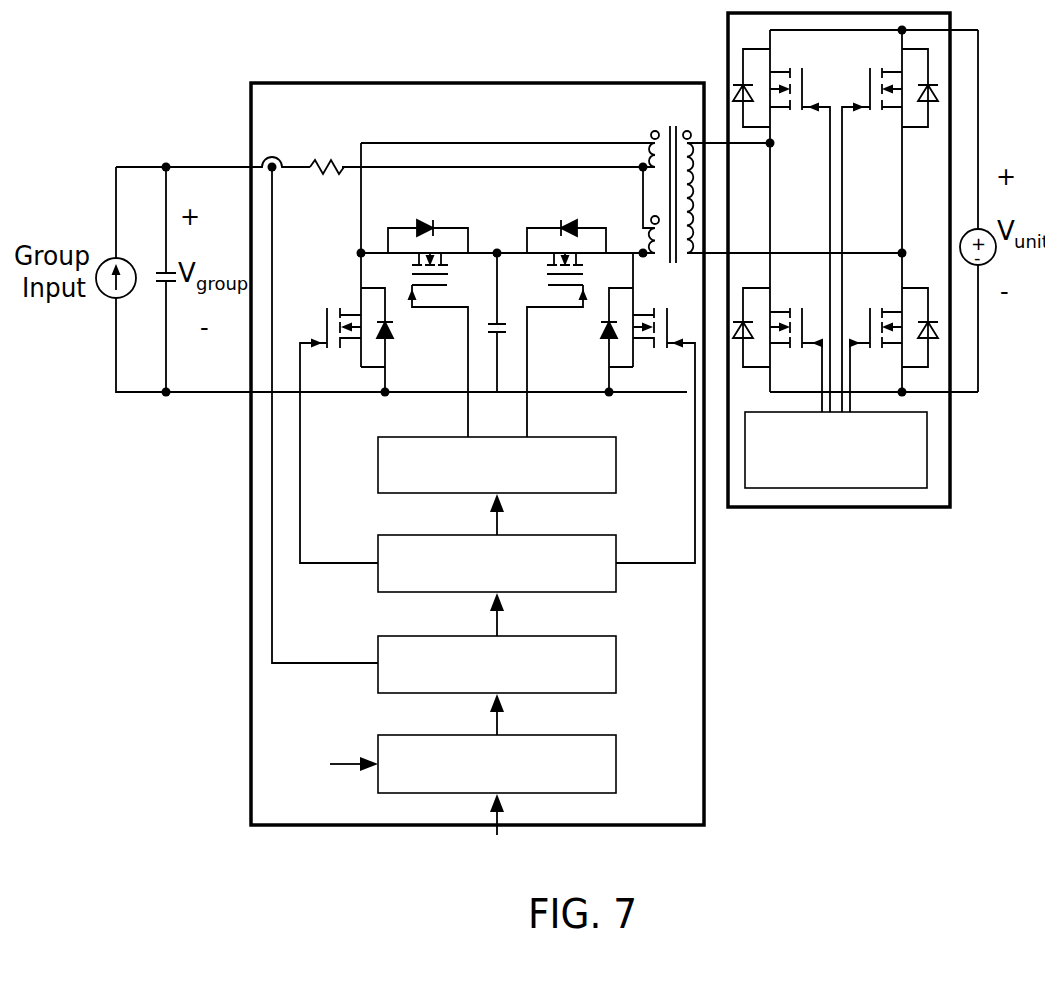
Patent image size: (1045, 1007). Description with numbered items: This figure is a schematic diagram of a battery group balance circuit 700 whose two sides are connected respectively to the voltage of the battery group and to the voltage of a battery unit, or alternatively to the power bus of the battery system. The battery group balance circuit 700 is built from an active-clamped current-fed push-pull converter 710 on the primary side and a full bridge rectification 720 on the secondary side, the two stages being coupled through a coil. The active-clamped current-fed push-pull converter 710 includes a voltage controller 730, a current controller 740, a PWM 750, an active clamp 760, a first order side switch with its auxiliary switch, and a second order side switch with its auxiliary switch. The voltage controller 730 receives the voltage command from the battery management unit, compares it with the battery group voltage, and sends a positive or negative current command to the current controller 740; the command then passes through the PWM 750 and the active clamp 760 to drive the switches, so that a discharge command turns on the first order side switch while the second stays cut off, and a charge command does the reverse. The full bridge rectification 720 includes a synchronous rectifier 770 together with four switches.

The battery group balance circuit 700 is at (640, 440).
The active-clamped current-fed push-pull converter 710 is at (517, 475).
The full bridge rectification 720 is at (856, 293).
The voltage controller 730 is at (617, 766).
The current controller 740 is at (617, 668).
The PWM 750 is at (617, 575).
The active clamp 760 is at (617, 463).
The synchronous rectifier 770 is at (928, 462).